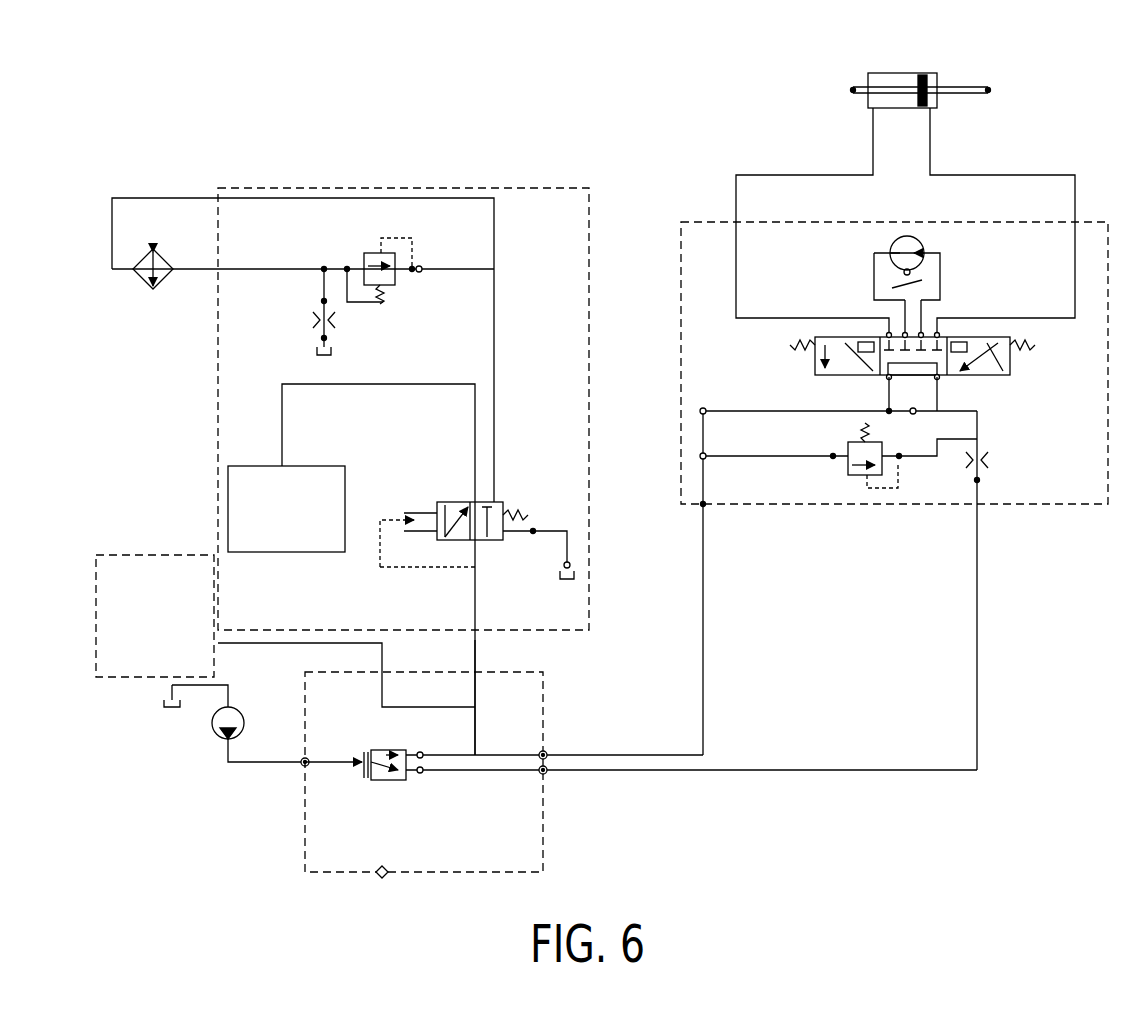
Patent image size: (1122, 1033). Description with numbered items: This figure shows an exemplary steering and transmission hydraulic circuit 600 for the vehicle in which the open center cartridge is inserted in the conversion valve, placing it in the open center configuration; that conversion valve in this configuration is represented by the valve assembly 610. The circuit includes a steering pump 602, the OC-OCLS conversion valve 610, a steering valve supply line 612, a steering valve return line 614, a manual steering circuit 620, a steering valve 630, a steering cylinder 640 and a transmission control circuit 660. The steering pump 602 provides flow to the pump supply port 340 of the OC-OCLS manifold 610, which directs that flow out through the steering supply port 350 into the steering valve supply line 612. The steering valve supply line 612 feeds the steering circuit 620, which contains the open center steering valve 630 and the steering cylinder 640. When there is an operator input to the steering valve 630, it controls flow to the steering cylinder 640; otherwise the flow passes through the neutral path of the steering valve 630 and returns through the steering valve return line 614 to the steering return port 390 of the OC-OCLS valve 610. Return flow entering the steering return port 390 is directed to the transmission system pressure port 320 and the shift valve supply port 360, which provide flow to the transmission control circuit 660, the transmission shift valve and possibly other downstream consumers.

The steering and transmission hydraulic circuit 600 is at (322, 156).
The transmission control circuit 660 is at (533, 215).
The manual steering circuit 620 is at (760, 156).
The steering valve 630 is at (813, 362).
The steering cylinder 640 is at (898, 73).
The OC-OCLS conversion valve 610 is at (372, 748).
The steering pump 602 is at (212, 722).
The pump supply port 340 is at (300, 765).
The steering return port 390 is at (543, 755).
The steering supply port 350 is at (543, 770).
The transmission system pressure port 320 is at (475, 672).
The shift valve supply port 360 is at (382, 670).
The steering valve return line 614 is at (703, 593).
The steering valve supply line 612 is at (808, 770).